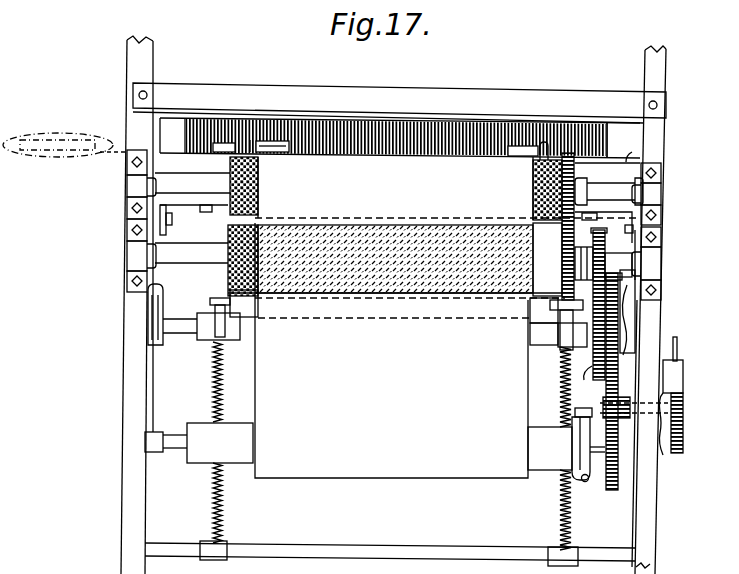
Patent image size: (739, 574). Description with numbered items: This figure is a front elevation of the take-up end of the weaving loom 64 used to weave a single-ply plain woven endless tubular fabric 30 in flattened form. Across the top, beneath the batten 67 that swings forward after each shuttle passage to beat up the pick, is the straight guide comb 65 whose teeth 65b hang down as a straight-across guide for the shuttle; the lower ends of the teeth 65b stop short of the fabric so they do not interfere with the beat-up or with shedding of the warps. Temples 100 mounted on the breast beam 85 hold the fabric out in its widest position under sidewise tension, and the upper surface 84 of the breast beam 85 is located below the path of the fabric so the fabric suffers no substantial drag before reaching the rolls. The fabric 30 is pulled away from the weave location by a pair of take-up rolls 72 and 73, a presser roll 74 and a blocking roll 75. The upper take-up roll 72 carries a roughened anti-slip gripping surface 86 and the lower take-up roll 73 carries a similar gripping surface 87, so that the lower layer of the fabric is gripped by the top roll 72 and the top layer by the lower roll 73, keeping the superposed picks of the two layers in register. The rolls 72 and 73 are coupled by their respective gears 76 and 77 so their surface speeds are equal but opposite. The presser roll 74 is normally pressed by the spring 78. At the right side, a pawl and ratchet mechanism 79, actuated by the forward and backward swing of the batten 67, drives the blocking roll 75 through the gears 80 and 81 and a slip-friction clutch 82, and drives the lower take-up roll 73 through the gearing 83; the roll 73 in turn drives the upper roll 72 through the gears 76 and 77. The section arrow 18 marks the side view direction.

The section line for Fig. 18 is at (177, 71).
The woven tubular fabric 30 is at (385, 478).
The weaving loom 64 is at (621, 150).
The guide comb 65 is at (183, 128).
The teeth 65b is at (277, 132).
The batten 67 is at (413, 91).
The take-up roll 72 is at (230, 166).
The take-up roll 73 is at (228, 236).
The presser roll 74 is at (387, 322).
The blocking roll 75 is at (244, 465).
The gear 76 is at (566, 150).
The gear 77 is at (575, 232).
The spring 78 is at (213, 500).
The pawl and ratchet mechanism 79 is at (686, 388).
The gear 80 is at (623, 452).
The gear 81 is at (610, 492).
The slip-friction clutch 82 is at (583, 484).
The gearing 83 is at (607, 385).
The upper surface of the breast beam 84 is at (630, 157).
The breast beam 85 is at (625, 172).
The gripping surface 86 is at (545, 188).
The gripping surface 87 is at (437, 248).
The temples 100 is at (297, 135).